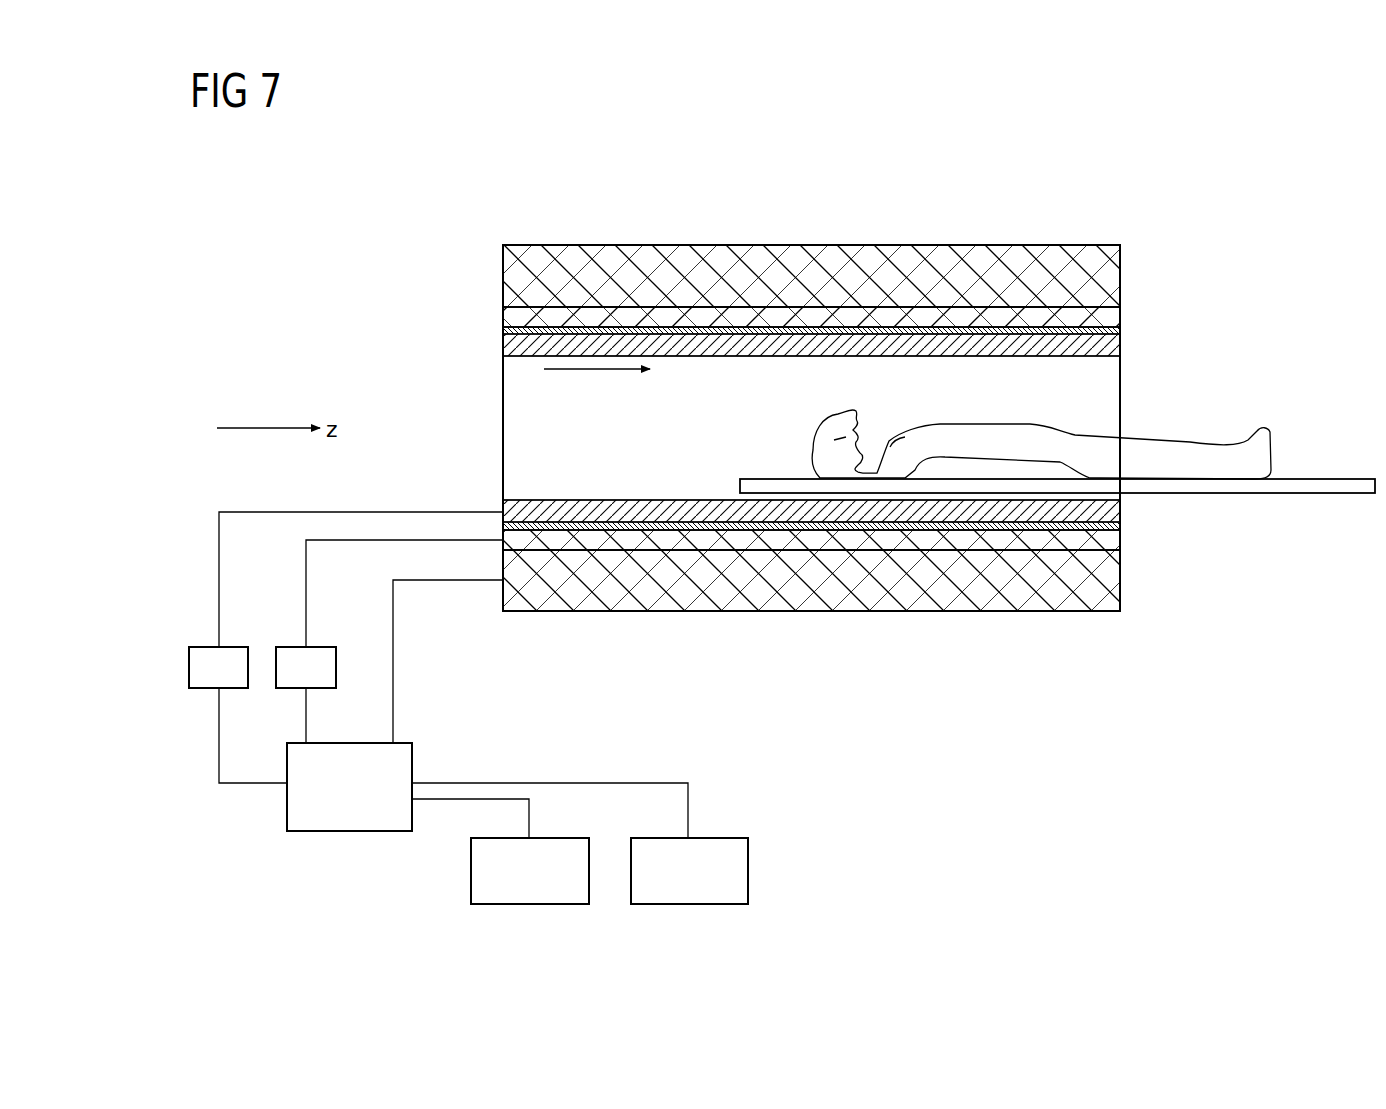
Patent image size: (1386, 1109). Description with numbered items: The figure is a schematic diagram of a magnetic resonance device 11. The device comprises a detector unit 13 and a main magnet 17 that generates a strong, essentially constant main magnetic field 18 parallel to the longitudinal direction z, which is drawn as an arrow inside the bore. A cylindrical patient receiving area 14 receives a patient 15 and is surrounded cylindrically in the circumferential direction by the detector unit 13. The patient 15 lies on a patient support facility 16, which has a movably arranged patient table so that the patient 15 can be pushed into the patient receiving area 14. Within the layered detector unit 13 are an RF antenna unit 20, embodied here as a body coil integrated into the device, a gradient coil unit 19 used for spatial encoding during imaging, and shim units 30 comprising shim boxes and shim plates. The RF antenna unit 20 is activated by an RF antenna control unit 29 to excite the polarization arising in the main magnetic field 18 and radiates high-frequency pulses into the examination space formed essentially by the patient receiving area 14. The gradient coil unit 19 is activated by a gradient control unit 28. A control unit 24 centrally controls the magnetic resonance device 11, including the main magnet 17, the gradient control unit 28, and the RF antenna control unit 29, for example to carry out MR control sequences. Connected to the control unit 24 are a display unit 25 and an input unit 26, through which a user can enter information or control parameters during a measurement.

The magnetic resonance device 11 is at (1064, 152).
The detector unit 13 is at (618, 230).
The patient receiving area 14 is at (1090, 393).
The patient 15 is at (1232, 459).
The patient support facility 16 is at (1335, 478).
The main magnet 17 is at (1104, 271).
The main magnetic field 18 is at (585, 377).
The gradient coil unit 19 is at (511, 317).
The RF antenna unit 20 is at (1104, 343).
The control unit 24 is at (347, 835).
The display unit 25 is at (528, 907).
The input unit 26 is at (688, 907).
The gradient control unit 28 is at (320, 645).
The RF antenna control unit 29 is at (232, 645).
The shim units 30 is at (511, 330).